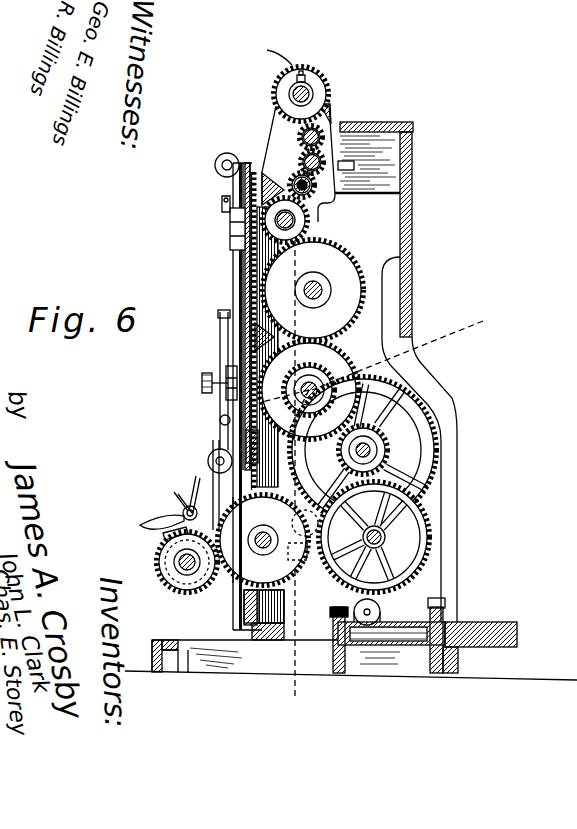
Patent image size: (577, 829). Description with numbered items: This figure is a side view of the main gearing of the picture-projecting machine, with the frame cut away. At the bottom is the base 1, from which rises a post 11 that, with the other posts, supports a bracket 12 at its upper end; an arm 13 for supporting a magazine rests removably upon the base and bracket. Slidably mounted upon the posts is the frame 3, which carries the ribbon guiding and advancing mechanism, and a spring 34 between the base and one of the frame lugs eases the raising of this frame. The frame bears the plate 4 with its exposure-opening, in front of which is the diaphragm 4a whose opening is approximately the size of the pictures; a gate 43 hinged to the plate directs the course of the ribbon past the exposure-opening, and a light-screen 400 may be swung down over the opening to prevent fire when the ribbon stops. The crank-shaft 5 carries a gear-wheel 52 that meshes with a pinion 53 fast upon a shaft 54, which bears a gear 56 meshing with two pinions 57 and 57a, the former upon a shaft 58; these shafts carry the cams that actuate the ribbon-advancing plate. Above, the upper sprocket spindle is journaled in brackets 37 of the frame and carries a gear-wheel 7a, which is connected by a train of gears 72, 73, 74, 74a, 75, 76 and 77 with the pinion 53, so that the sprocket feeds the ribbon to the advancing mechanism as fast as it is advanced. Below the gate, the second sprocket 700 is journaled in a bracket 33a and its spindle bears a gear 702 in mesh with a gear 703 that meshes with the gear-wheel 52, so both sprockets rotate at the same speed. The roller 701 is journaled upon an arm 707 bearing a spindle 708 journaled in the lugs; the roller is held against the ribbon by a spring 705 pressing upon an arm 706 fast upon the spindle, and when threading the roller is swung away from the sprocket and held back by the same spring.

The base 1 is at (212, 668).
The frame 3 is at (252, 336).
The plate 4 is at (233, 282).
The diaphragm 4a is at (230, 231).
The crank-shaft 5 is at (387, 538).
The gear-wheel 7a is at (317, 66).
The post 11 is at (445, 579).
The bracket 12 is at (413, 122).
The arm 13 is at (517, 634).
The bracket 33a is at (185, 512).
The spring 34 is at (273, 642).
The bracket 37 is at (268, 128).
The gate 43 is at (232, 254).
The gear-wheel 52 is at (432, 512).
The pinion 53 is at (378, 449).
The shaft 54 is at (388, 441).
The gear 56 is at (431, 405).
The pinion 57 is at (386, 367).
The pinion 57a is at (306, 485).
The shaft 58 is at (218, 410).
The gear 72 is at (327, 123).
The gear 73 is at (367, 122).
The gear 74 is at (318, 188).
The pinion 74a is at (293, 180).
The gear 75 is at (312, 222).
The gear 76 is at (368, 289).
The gear 77 is at (355, 360).
The light-screen 400 is at (227, 212).
The second sprocket 700 is at (162, 587).
The roller 701 is at (165, 537).
The gear 702 is at (183, 592).
The gear 703 is at (263, 540).
The spring 705 is at (213, 482).
The arm 706 is at (196, 484).
The arm 707 is at (184, 506).
The spindle 708 is at (303, 562).